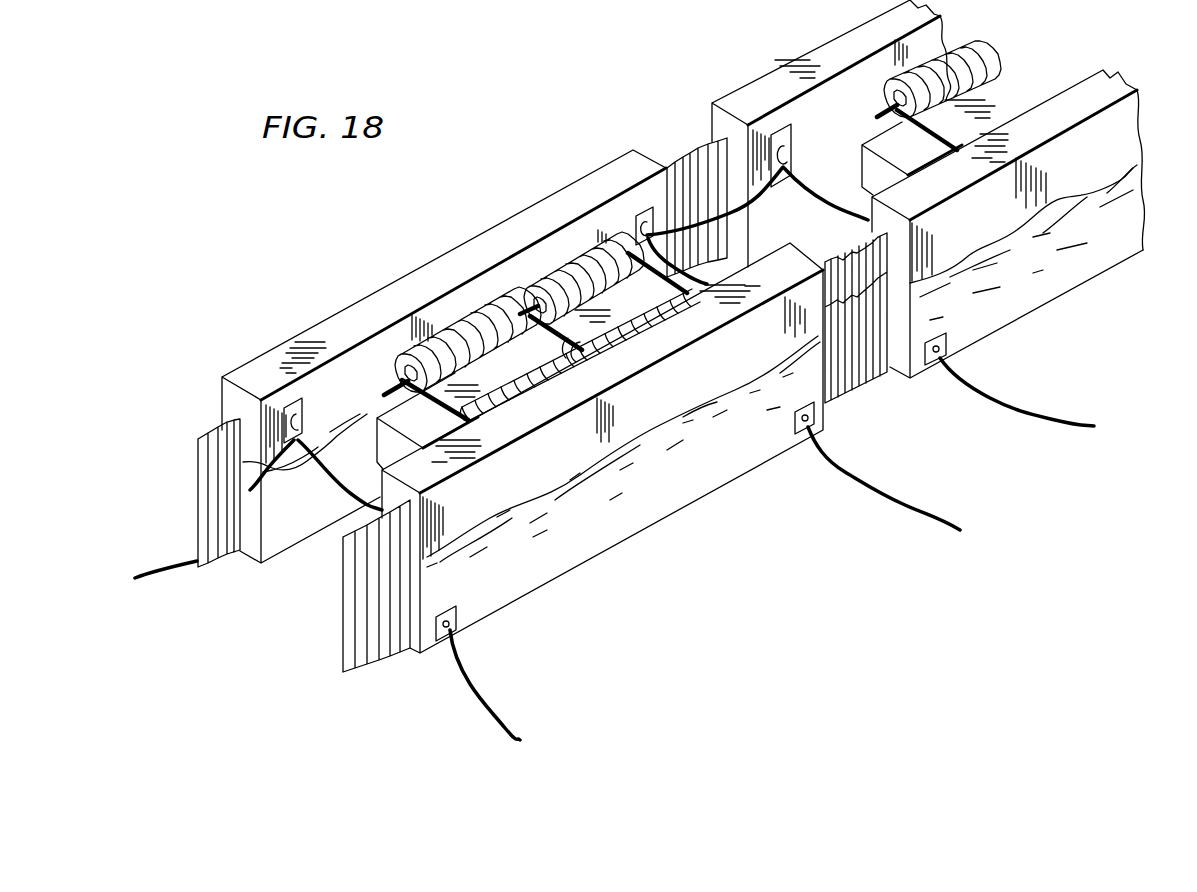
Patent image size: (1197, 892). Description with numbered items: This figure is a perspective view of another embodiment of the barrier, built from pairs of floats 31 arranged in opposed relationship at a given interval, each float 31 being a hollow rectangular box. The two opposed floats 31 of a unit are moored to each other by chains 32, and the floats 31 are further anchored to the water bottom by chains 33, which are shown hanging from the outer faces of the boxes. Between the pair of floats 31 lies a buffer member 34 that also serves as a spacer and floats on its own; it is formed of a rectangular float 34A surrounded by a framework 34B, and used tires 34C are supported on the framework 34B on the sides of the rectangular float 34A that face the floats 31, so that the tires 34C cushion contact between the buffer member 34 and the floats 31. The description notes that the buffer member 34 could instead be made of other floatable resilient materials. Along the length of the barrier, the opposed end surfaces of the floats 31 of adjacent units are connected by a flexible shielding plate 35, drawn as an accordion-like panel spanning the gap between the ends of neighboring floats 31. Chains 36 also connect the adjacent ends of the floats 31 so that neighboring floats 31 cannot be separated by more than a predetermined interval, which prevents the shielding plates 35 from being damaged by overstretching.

The float 31 is at (420, 268).
The chain 32 is at (340, 500).
The chain 33 is at (482, 667).
The buffer member 34 is at (383, 378).
The rectangular float 34A is at (472, 435).
The framework 34B is at (590, 380).
The used tire 34C is at (591, 250).
The flexible shielding plate 35 is at (200, 494).
The chain 36 is at (180, 575).